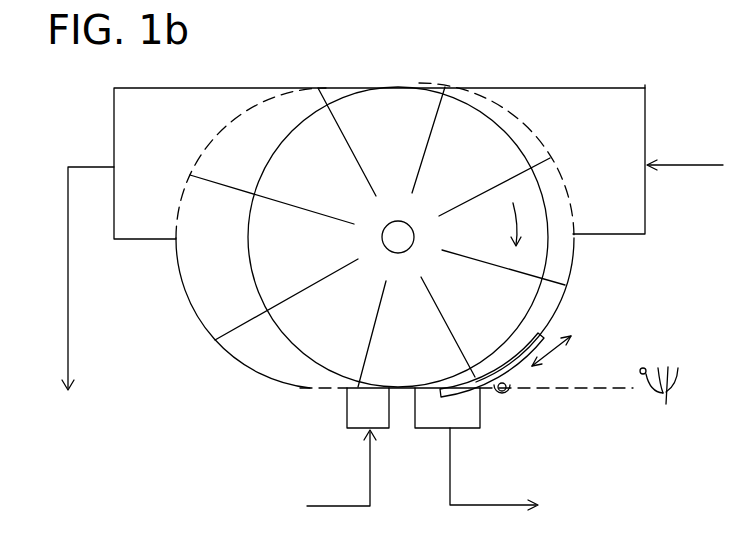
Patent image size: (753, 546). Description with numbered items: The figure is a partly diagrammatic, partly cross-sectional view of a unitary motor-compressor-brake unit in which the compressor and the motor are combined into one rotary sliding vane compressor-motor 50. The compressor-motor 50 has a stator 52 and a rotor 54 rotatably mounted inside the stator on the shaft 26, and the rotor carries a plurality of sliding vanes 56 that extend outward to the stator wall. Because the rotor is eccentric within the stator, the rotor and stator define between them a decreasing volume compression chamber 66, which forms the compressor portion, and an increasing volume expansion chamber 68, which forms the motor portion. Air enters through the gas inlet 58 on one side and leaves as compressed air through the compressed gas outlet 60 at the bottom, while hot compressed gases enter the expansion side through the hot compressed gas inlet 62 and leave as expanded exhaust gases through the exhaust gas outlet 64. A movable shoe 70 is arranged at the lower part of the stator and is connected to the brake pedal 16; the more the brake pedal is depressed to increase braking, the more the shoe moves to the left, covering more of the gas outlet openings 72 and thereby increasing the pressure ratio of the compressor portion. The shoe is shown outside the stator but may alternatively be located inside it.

The brake pedal 16 is at (665, 376).
The shaft 26 is at (384, 236).
The rotary sliding vane compressor-motor 50 is at (446, 78).
The stator 52 is at (203, 332).
The rotor 54 is at (383, 97).
The sliding vanes 56 is at (316, 100).
The gas inlet 58 is at (646, 117).
The compressed gas outlet 60 is at (465, 432).
The hot compressed gas inlet 62 is at (352, 432).
The exhaust gas outlet 64 is at (110, 108).
The decreasing volume compression chamber 66 is at (556, 300).
The increasing volume expansion chamber 68 is at (196, 287).
The movable shoe 70 is at (486, 389).
The gas outlet openings 72 is at (449, 381).